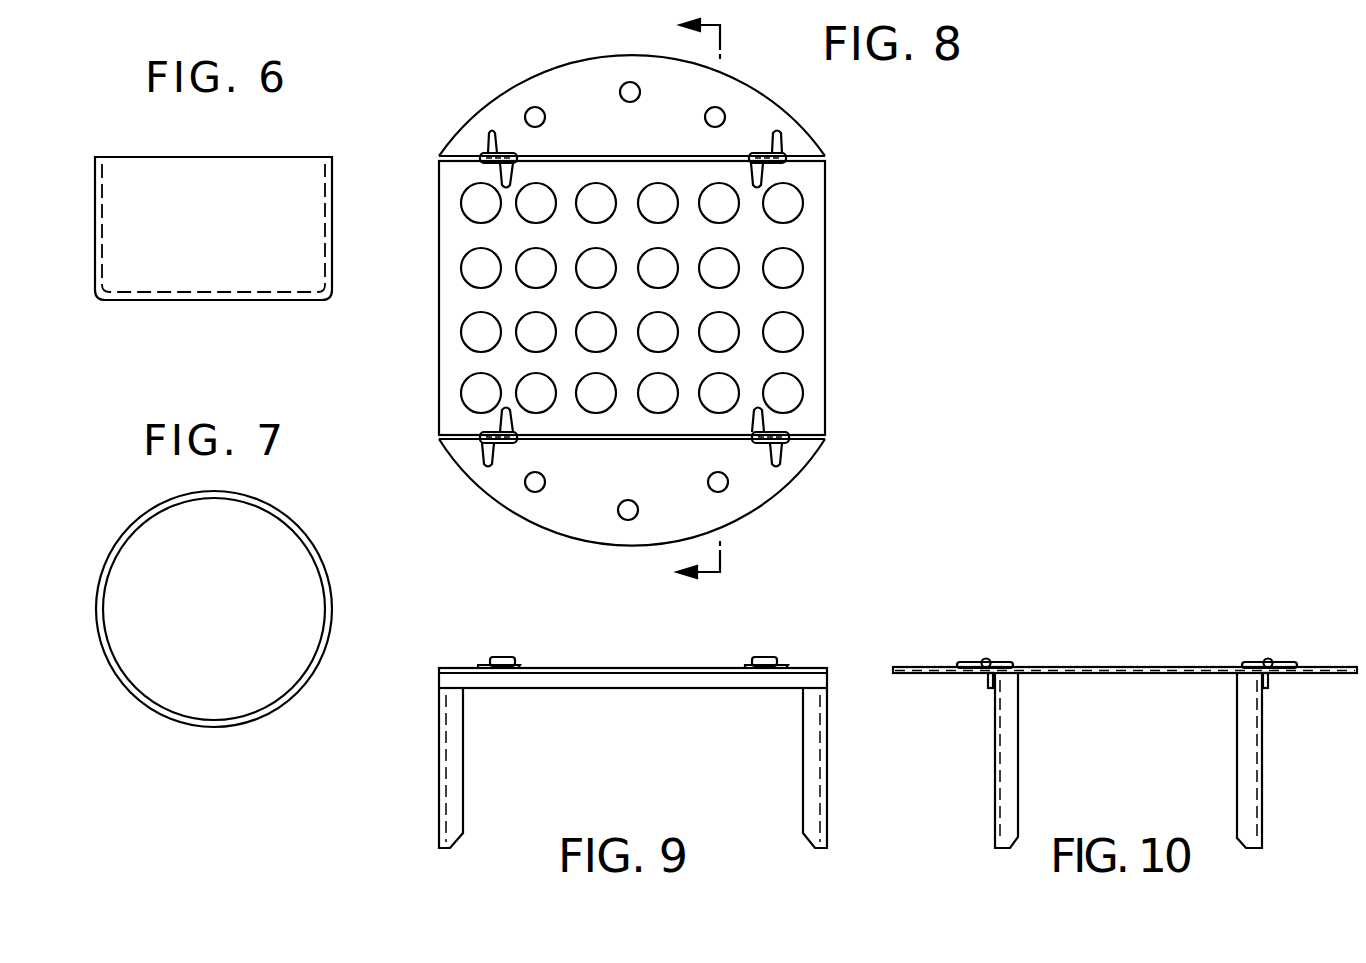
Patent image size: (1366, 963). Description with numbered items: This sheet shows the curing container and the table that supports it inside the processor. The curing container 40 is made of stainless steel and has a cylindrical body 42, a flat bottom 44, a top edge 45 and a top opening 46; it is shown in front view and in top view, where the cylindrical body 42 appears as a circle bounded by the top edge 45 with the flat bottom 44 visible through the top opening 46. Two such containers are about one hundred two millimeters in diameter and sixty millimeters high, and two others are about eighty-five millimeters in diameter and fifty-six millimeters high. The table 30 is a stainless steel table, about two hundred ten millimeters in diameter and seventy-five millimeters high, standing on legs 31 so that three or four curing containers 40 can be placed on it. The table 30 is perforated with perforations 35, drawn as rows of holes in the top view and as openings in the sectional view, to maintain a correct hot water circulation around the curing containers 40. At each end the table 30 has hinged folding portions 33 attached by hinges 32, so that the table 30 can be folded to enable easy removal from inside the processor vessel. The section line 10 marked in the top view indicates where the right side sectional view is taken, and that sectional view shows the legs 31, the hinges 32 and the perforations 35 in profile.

In FIG. 8, the section line 10— 10 is at (680, 301).
In FIG. 8, the table 30 is at (818, 180).
In FIG. 9, the table 30 is at (455, 668).
In FIG. 10, the table 30 is at (1128, 668).
In FIG. 9, the legs 31 is at (463, 778).
In FIG. 10, the legs 31 is at (995, 765).
In FIG. 8, the hinges 32 is at (483, 140).
In FIG. 9, the hinges 32 is at (500, 656).
In FIG. 10, the hinges 32 is at (1000, 662).
In FIG. 8, the hinged folding portions 33 is at (550, 88).
In FIG. 9, the hinged folding portions 33 is at (635, 666).
In FIG. 10, the hinged folding portions 33 is at (912, 667).
In FIG. 8, the perforations 35 is at (712, 118).
In FIG. 10, the perforations 35 is at (945, 668).
In FIG. 6, the curing container 40 is at (155, 165).
In FIG. 7, the curing container 40 is at (305, 537).
In FIG. 6, the cylindrical body 42 is at (334, 262).
In FIG. 7, the cylindrical body 42 is at (153, 718).
In FIG. 6, the flat bottom 44 is at (196, 300).
In FIG. 7, the flat bottom 44 is at (163, 550).
In FIG. 6, the top edge 45 is at (330, 157).
In FIG. 7, the top edge 45 is at (200, 725).
In FIG. 6, the top opening 46 is at (233, 185).
In FIG. 7, the top opening 46 is at (254, 685).